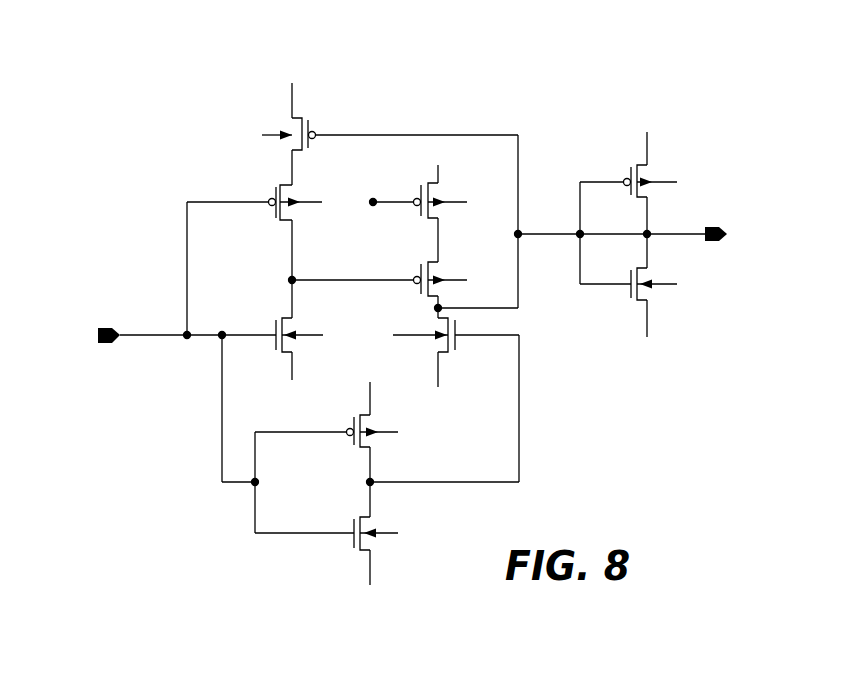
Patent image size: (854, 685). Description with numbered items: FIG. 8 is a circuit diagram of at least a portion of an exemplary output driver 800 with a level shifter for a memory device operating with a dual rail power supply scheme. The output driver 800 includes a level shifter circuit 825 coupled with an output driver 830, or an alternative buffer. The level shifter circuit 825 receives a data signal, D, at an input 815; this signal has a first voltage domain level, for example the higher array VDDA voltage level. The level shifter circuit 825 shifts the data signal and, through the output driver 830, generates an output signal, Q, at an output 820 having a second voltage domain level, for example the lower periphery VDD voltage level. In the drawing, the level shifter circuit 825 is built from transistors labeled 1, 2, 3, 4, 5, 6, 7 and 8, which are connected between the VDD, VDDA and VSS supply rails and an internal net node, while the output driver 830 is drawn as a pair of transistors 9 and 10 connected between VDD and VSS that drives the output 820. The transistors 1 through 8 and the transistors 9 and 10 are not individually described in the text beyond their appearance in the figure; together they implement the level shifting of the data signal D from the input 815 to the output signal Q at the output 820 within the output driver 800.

The first PMOS transistor 1 is at (390, 118).
The second PMOS transistor 2 is at (254, 248).
The third PMOS transistor 3 is at (413, 200).
The fourth PMOS transistor 4 is at (405, 287).
The first NMOS transistor 5 is at (272, 362).
The second NMOS transistor 6 is at (456, 400).
The PMOS transistor of net4 inverter 7 is at (387, 435).
The NMOS transistor of net4 inverter 8 is at (326, 562).
The output inverter PMOS transistor 9 is at (628, 186).
The output inverter NMOS transistor 10 is at (629, 313).
The output driver 800 is at (740, 49).
The input 815 is at (106, 352).
The output 820 is at (724, 252).
The level shifter circuit 825 is at (436, 88).
The output driver 830 is at (629, 90).